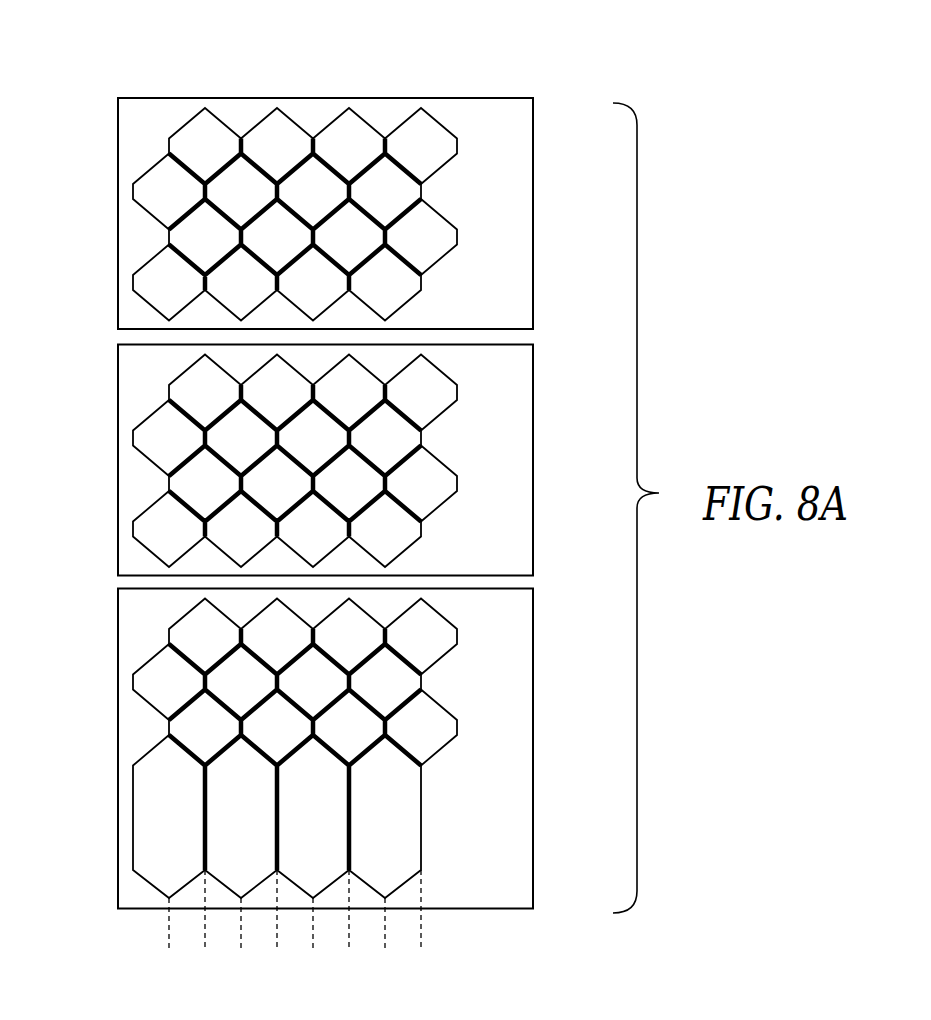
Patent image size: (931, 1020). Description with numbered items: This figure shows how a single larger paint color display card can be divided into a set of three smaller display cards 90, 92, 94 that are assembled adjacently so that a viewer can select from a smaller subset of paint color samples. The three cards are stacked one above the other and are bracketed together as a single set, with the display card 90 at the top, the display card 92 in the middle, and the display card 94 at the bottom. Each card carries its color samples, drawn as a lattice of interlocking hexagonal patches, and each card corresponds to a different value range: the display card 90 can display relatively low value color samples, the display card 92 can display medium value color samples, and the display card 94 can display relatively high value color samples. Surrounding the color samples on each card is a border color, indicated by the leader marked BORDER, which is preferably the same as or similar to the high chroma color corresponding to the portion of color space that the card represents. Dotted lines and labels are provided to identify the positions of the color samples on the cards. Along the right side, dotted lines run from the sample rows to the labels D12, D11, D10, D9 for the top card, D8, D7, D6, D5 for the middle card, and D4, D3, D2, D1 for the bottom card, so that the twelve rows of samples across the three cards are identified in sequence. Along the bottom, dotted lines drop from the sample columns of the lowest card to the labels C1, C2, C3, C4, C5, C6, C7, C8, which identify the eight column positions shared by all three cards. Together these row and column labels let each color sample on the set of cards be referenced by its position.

The display card 90 is at (135, 238).
The display card 92 is at (310, 460).
The display card 94 is at (313, 749).
The border color BORDER is at (242, 110).
The label D1 is at (360, 816).
The label D2 is at (378, 728).
The label D3 is at (360, 682).
The label D4 is at (378, 637).
The label D5 is at (360, 529).
The label D6 is at (378, 484).
The label D7 is at (360, 438).
The label D8 is at (378, 393).
The label D9 is at (421, 282).
The label D10 is at (457, 237).
The label D11 is at (421, 192).
The label D12 is at (457, 146).
The label C1 is at (172, 940).
The label C2 is at (208, 926).
The label C3 is at (244, 940).
The label C4 is at (280, 926).
The label C5 is at (316, 940).
The label C6 is at (352, 926).
The label C7 is at (388, 940).
The label C8 is at (424, 926).